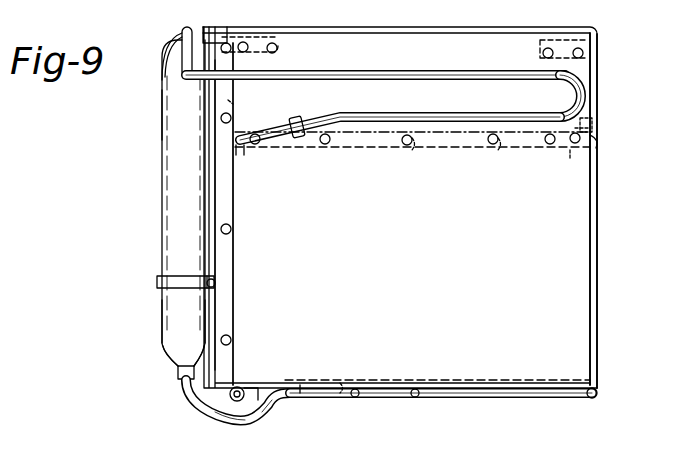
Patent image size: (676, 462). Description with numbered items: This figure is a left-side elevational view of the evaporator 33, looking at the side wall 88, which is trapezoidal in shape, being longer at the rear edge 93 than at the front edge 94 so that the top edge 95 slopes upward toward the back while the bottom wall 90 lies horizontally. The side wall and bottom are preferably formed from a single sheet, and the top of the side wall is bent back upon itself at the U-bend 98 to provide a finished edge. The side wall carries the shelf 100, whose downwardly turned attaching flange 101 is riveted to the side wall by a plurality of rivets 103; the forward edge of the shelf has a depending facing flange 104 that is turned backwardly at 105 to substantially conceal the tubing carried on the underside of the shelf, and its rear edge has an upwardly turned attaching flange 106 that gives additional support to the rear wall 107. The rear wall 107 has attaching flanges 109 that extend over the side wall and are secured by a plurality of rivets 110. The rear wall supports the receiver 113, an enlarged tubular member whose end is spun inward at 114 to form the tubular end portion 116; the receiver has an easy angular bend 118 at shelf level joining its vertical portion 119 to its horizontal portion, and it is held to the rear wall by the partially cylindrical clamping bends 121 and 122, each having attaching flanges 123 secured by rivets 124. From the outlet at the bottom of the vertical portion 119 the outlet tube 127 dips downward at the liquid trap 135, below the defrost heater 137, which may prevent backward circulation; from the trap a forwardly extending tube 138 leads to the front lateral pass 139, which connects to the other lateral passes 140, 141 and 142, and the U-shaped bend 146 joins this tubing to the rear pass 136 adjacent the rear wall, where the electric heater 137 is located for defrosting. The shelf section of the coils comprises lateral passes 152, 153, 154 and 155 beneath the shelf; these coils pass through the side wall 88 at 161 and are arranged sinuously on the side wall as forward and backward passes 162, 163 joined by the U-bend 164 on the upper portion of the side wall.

The U-bend 98 is at (300, 28).
The top edge 95 is at (478, 30).
The backward pass 163 is at (446, 58).
The U-bend 164 is at (578, 84).
The forward pass 162 is at (409, 112).
The lateral pass 155 is at (305, 132).
The side wall passage 161 is at (240, 152).
The attaching flange 101 is at (322, 148).
The rivets 103 is at (258, 144).
The lateral pass 154 is at (415, 150).
The lateral pass 153 is at (500, 150).
The lateral pass 152 is at (572, 160).
The shelf 100 is at (580, 118).
The facing flange 104 is at (596, 127).
The backward turn of facing flange 105 is at (600, 146).
The front edge 94 is at (598, 172).
The side wall 88 is at (585, 212).
The evaporator 33 is at (585, 333).
The rear edge 93 is at (220, 378).
The attaching flange 106 is at (232, 104).
The rear wall 107 is at (216, 208).
The attaching flanges 109 is at (234, 297).
The rivets 110 is at (231, 118).
The clamping bend 121 is at (165, 73).
The easy angular bend 118 is at (162, 116).
The receiver 113 is at (162, 208).
The clamping bend 122 is at (160, 284).
The attaching flanges 123 is at (210, 280).
The rivets 124 is at (215, 284).
The vertical portion 119 is at (162, 320).
The spun-in end 114 is at (176, 358).
The tubular end portion 116 is at (180, 372).
The outlet tube 127 is at (202, 401).
The liquid trap 135 is at (243, 421).
The rear pass 136 is at (272, 404).
The defrost heater 137 is at (255, 376).
The U-shaped bend 146 is at (285, 386).
The lateral pass 142 is at (349, 376).
The forwardly extending tube 138 is at (355, 398).
The lateral pass 141 is at (416, 398).
The lateral pass 140 is at (498, 394).
The front lateral pass 139 is at (592, 396).
The bottom wall 90 is at (509, 372).